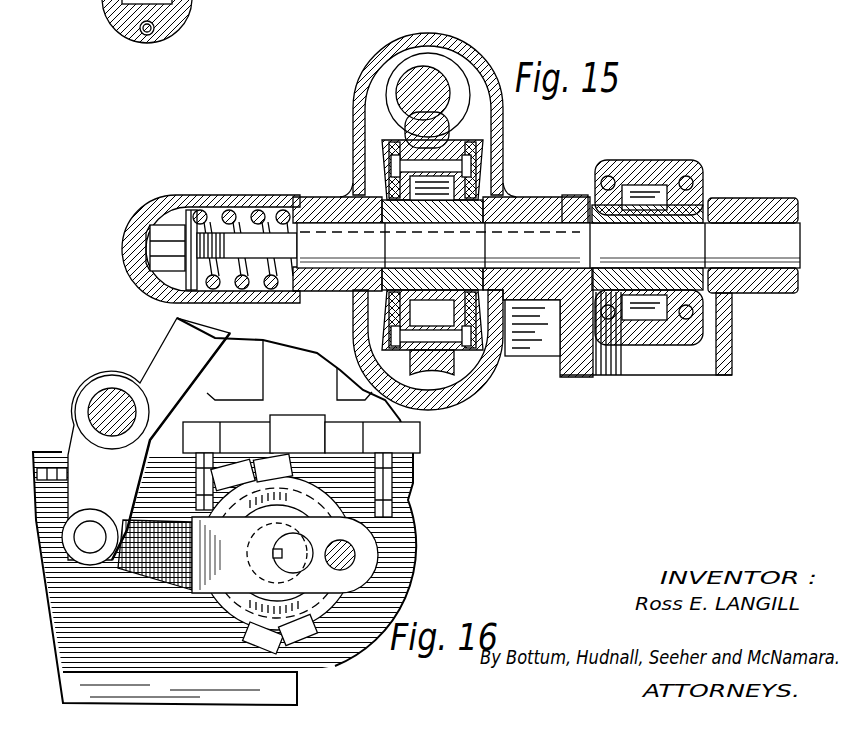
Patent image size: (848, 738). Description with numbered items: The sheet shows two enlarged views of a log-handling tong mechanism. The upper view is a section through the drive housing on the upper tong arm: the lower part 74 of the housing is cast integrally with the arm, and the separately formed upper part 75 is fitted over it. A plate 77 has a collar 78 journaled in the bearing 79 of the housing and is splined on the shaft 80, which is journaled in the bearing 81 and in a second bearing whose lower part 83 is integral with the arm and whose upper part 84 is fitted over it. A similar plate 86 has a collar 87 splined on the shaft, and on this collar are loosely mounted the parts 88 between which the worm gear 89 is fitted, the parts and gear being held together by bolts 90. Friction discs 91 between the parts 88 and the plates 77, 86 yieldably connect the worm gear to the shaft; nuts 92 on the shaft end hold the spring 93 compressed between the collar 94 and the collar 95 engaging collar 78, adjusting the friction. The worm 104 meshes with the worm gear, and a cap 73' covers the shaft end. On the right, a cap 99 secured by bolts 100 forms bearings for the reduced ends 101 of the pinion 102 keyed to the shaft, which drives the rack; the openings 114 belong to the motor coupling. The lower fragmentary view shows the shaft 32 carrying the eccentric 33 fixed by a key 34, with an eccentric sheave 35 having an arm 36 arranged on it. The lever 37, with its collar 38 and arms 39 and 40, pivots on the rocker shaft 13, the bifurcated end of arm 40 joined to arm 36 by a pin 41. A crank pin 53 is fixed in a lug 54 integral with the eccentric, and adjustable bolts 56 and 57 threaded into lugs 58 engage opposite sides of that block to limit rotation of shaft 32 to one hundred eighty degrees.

In FIG. 15, the openings 114 is at (123, 21).
In FIG. 15, the cap 73' is at (189, 249).
In FIG. 15, the lower part of housing 74 is at (494, 378).
In FIG. 15, the upper part of housing 75 is at (412, 36).
In FIG. 15, the plate 77 is at (380, 176).
In FIG. 15, the collar 78 is at (338, 210).
In FIG. 15, the bearing 79 is at (312, 197).
In FIG. 15, the shaft 80 is at (566, 200).
In FIG. 15, the bearing 81 is at (526, 200).
In FIG. 15, the part of bearing 83 is at (768, 293).
In FIG. 15, the upper part of bearing 84 is at (752, 199).
In FIG. 15, the plate 86 is at (481, 168).
In FIG. 15, the collar 87 is at (460, 215).
In FIG. 15, the parts 88 is at (395, 140).
In FIG. 15, the worm gear 89 is at (441, 118).
In FIG. 15, the bolts 90 is at (386, 160).
In FIG. 15, the friction discs 91 is at (362, 142).
In FIG. 15, the nuts 92 is at (158, 220).
In FIG. 15, the spring 93 is at (222, 196).
In FIG. 15, the collar 94 is at (176, 198).
In FIG. 15, the collar 95 is at (287, 278).
In FIG. 15, the cap 99 is at (652, 162).
In FIG. 15, the bolts 100 is at (610, 177).
In FIG. 15, the reduced ends 101 is at (613, 210).
In FIG. 15, the pinion 102 is at (650, 290).
In FIG. 15, the worm 104 is at (447, 72).
In FIG. 16, the rocker shaft 13 is at (103, 402).
In FIG. 16, the shaft 32 is at (294, 543).
In FIG. 16, the eccentric 33 is at (290, 500).
In FIG. 16, the key 34 is at (276, 551).
In FIG. 16, the eccentric sheave 35 is at (316, 508).
In FIG. 16, the arm 36 is at (133, 567).
In FIG. 16, the lever 37 is at (130, 373).
In FIG. 16, the collar 38 is at (82, 398).
In FIG. 16, the arm 39 is at (170, 340).
In FIG. 16, the arm 40 is at (77, 450).
In FIG. 16, the pin 41 is at (90, 537).
In FIG. 16, the crank pin 53 is at (357, 556).
In FIG. 16, the lug 54 is at (362, 623).
In FIG. 16, the adjustable bolt 56 is at (196, 486).
In FIG. 16, the adjustable bolt 57 is at (397, 490).
In FIG. 16, the lugs 58 is at (196, 428).